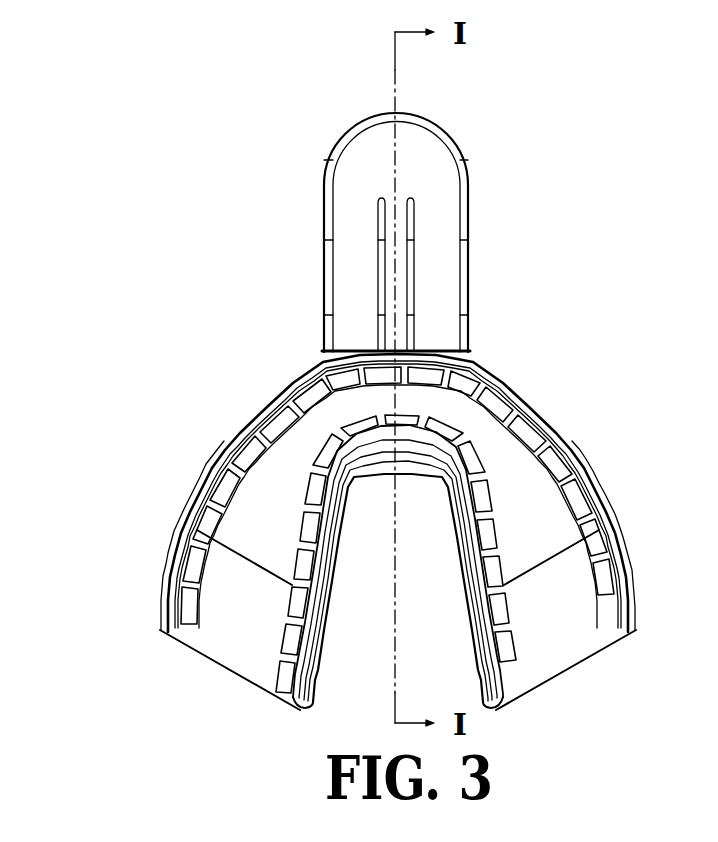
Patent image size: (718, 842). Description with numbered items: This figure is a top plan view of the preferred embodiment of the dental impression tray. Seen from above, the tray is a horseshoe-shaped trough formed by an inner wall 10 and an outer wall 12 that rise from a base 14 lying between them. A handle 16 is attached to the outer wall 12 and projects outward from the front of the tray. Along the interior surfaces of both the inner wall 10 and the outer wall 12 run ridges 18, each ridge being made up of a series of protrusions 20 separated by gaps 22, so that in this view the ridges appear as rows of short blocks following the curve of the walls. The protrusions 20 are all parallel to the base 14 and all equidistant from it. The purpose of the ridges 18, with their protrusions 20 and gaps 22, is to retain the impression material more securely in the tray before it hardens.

The inner wall 10 is at (477, 650).
The outer wall 12 is at (207, 477).
The base 14 is at (227, 663).
The handle 16 is at (443, 128).
The ridges 18 is at (527, 440).
The protrusions 20 is at (283, 610).
The gaps 22 is at (603, 580).